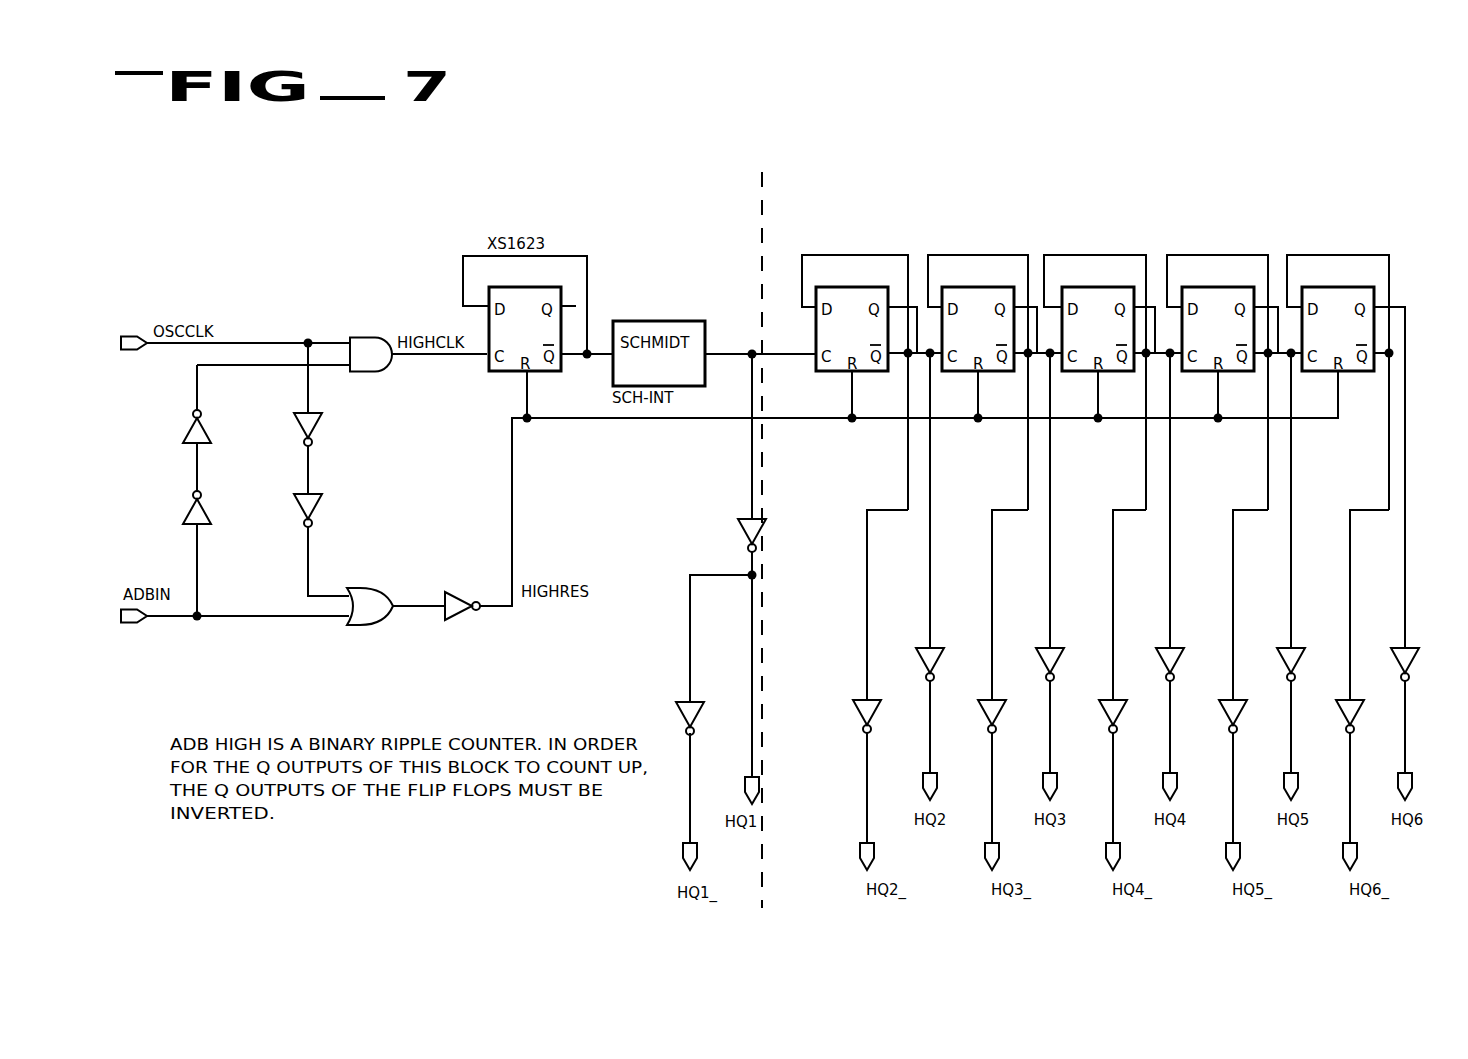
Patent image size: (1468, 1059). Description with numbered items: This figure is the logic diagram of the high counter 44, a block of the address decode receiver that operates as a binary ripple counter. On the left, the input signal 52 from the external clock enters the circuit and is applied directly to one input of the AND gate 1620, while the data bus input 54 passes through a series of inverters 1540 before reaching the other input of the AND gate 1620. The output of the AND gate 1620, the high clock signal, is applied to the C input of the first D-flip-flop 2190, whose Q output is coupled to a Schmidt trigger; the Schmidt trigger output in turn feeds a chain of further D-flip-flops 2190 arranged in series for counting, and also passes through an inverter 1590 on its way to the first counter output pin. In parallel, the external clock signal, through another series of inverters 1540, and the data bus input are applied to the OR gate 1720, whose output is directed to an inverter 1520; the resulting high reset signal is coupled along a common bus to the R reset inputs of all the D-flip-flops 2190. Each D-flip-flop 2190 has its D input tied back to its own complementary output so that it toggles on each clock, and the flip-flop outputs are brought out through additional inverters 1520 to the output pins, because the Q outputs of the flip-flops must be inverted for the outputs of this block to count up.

The high counter 44 is at (858, 143).
The input signal 52 is at (245, 341).
The data bus input 54 is at (181, 618).
The inverter 1540 is at (275, 468).
The AND gate 1620 is at (418, 367).
The OR gate 1720 is at (396, 620).
The inverter 1520 is at (932, 663).
The inverter 1590 is at (730, 535).
The D-flip-flop 2190 is at (937, 342).